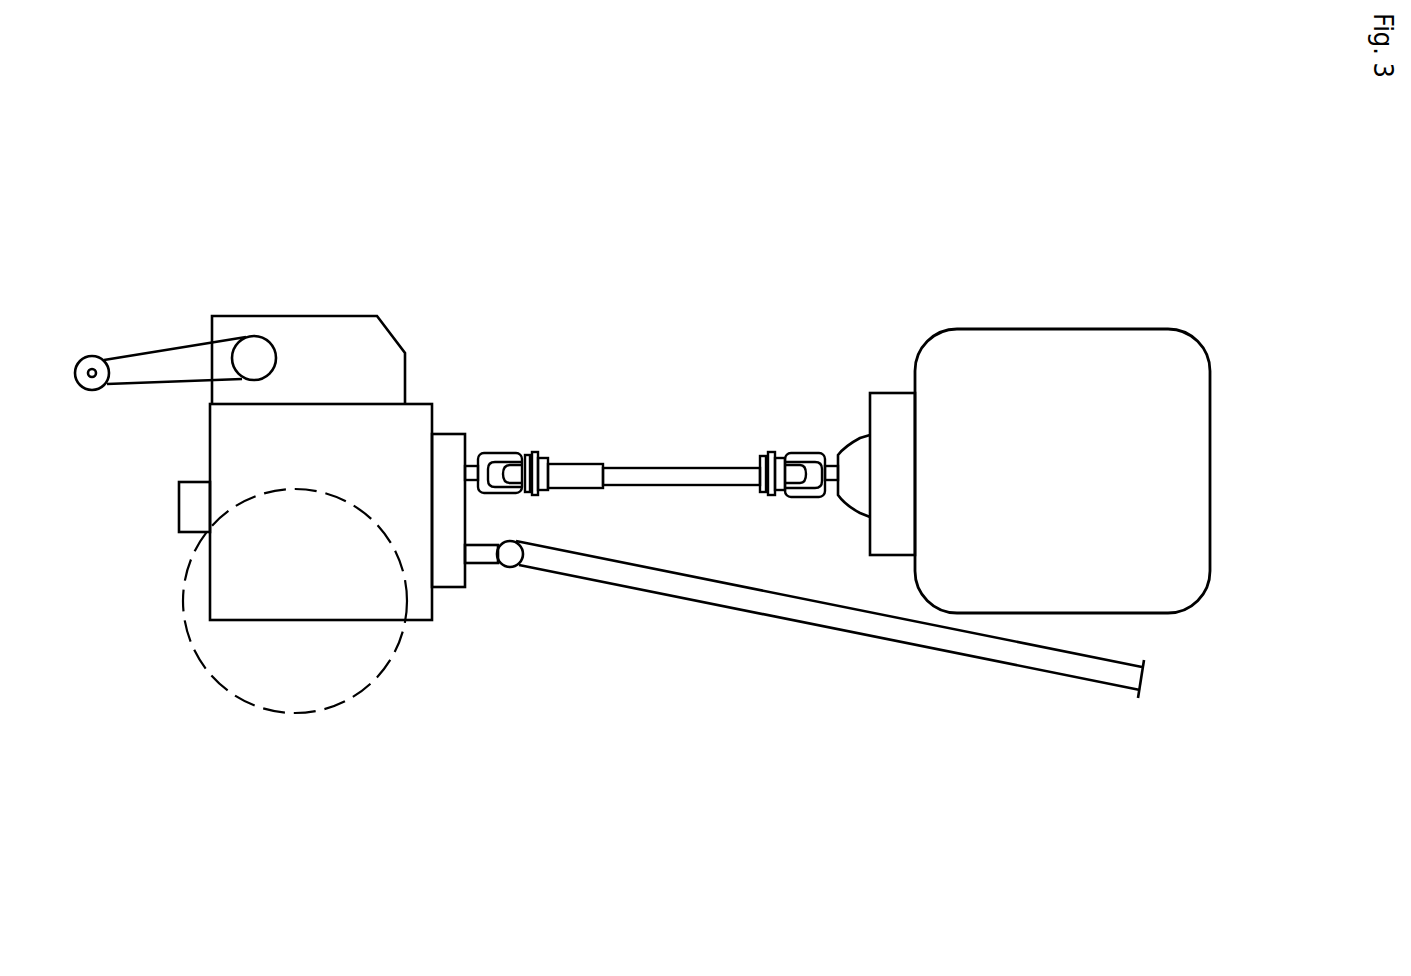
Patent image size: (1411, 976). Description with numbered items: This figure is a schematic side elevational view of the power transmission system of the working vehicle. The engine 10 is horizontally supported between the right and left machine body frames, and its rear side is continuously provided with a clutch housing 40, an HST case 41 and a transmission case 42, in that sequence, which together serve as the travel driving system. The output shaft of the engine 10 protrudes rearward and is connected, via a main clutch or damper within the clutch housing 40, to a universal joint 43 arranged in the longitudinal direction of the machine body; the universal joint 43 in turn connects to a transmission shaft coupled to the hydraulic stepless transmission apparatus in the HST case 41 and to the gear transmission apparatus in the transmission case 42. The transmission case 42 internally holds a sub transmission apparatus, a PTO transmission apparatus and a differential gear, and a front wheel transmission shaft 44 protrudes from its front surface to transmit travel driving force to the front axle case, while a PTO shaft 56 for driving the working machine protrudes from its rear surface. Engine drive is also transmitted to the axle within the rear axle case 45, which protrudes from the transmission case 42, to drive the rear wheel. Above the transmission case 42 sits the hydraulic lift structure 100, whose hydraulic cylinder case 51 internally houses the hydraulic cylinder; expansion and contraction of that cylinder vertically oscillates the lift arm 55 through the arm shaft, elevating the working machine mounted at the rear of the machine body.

The hydraulic lift structure 100 is at (231, 257).
The engine 10 is at (1210, 465).
The clutch housing 40 is at (897, 393).
The HST case 41 is at (448, 434).
The transmission case 42 is at (423, 622).
The universal joint 43 is at (703, 466).
The front wheel transmission shaft 44 is at (483, 565).
The rear axle case 45 is at (361, 694).
The hydraulic cylinder case 51 is at (316, 316).
The lift arm 55 is at (156, 341).
The PTO shaft 56 is at (190, 532).